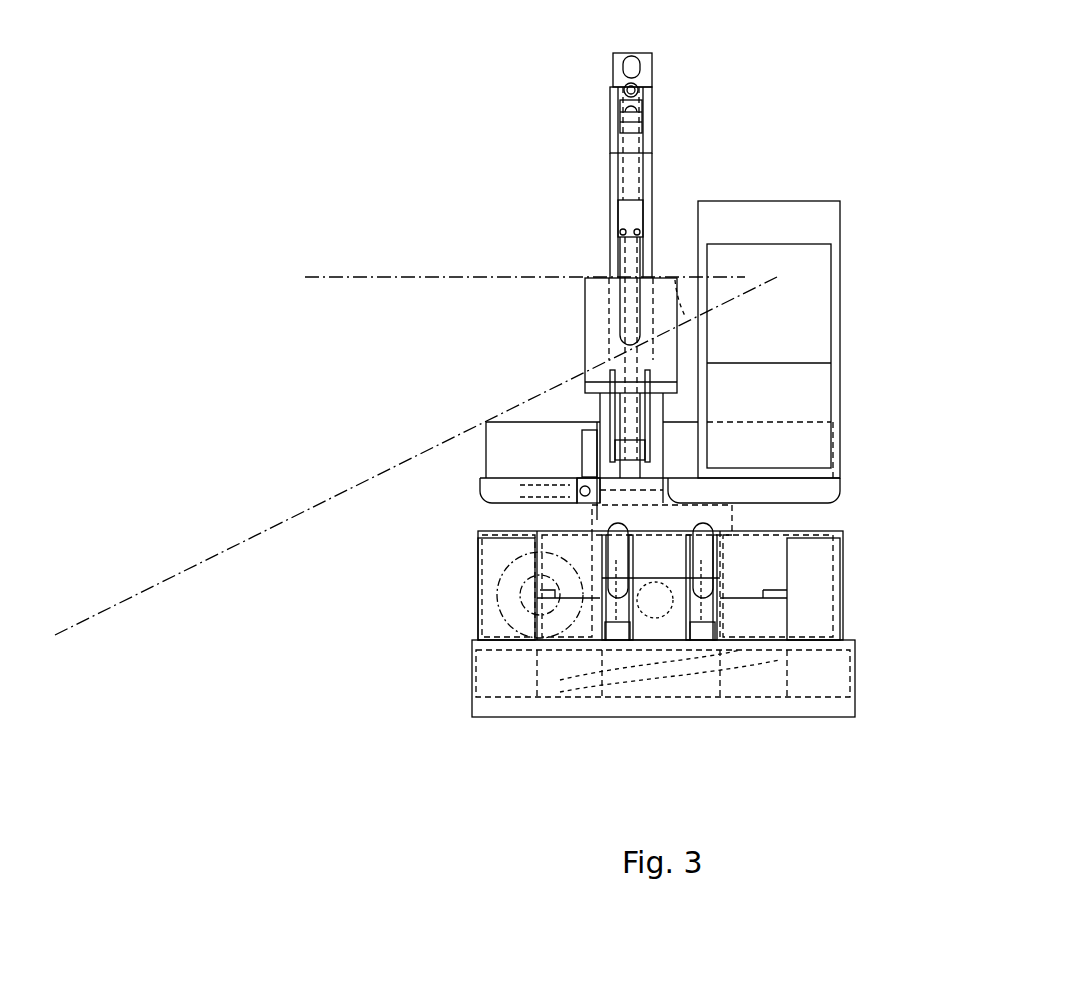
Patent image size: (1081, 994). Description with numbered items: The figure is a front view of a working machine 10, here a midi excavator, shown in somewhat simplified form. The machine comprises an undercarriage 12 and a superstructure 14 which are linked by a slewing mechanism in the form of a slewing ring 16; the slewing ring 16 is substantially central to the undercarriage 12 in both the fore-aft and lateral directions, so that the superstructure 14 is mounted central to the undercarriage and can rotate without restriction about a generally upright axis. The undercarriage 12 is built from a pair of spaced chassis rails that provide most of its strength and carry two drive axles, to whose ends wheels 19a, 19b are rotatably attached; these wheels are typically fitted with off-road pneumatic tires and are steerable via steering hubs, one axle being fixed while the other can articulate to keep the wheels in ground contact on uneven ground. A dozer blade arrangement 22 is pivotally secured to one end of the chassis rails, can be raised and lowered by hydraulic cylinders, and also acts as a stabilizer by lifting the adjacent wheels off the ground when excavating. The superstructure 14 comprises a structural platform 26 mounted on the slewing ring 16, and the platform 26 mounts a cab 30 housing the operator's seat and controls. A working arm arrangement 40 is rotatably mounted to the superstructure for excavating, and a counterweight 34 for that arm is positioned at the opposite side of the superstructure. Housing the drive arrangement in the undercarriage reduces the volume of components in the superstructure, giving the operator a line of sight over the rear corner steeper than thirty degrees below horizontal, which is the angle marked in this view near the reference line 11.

The working machine 10 is at (800, 117).
The drilling axis arrow 11 is at (415, 537).
The undercarriage 12 is at (825, 528).
The superstructure 14 is at (922, 421).
The slewing ring 16 is at (598, 522).
The wheel 19a is at (810, 588).
The wheel 19b is at (503, 598).
The dozer blade arrangement 22 is at (818, 668).
The structural platform 26 is at (838, 495).
The cab 30 is at (838, 215).
The counterweight 34 is at (486, 420).
The working arm arrangement 40 is at (723, 169).